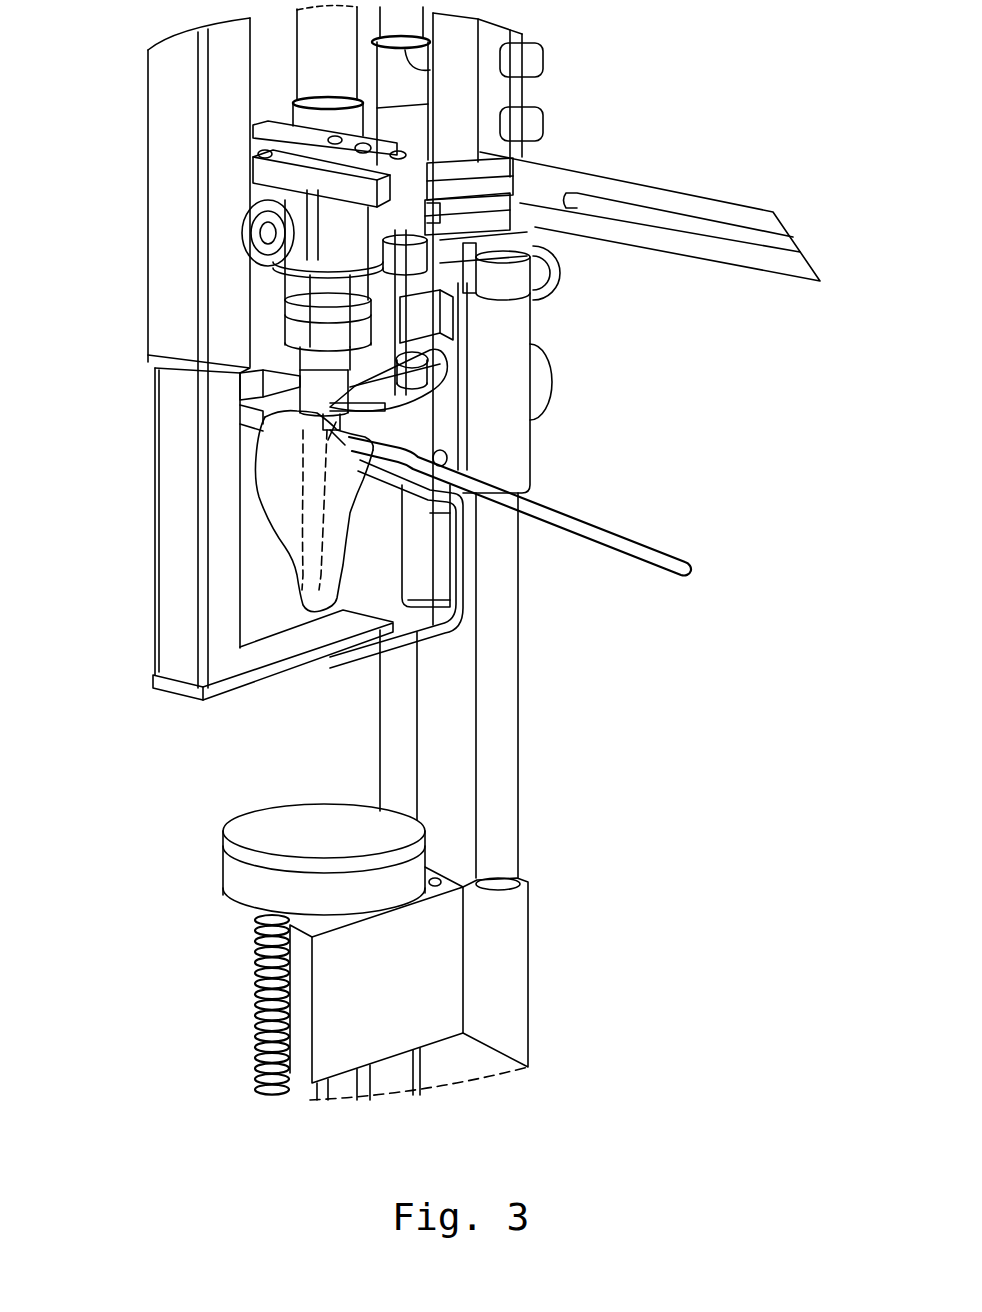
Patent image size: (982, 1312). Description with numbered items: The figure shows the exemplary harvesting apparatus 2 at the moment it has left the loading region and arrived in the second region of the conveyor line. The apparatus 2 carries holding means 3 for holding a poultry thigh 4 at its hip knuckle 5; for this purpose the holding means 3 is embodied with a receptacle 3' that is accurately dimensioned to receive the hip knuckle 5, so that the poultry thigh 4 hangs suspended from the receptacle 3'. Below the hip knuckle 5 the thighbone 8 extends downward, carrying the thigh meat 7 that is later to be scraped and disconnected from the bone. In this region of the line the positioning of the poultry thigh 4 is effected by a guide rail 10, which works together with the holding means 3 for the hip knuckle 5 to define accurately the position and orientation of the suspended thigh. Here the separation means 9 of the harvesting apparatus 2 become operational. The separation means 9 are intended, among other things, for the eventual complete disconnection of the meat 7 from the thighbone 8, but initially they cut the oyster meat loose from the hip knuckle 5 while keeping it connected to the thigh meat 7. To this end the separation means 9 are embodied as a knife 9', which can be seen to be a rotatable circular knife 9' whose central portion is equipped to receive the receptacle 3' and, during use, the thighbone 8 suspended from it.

The harvesting apparatus 2 is at (637, 362).
The holding means 3 is at (502, 408).
The receptacle 3' is at (497, 556).
The poultry thigh 4 is at (352, 570).
The hip knuckle 5 is at (323, 427).
The meat 7 is at (287, 487).
The thighbone 8 is at (310, 537).
The separation means 9 is at (188, 356).
The knife 9' is at (258, 356).
The guide rail 10 is at (527, 507).